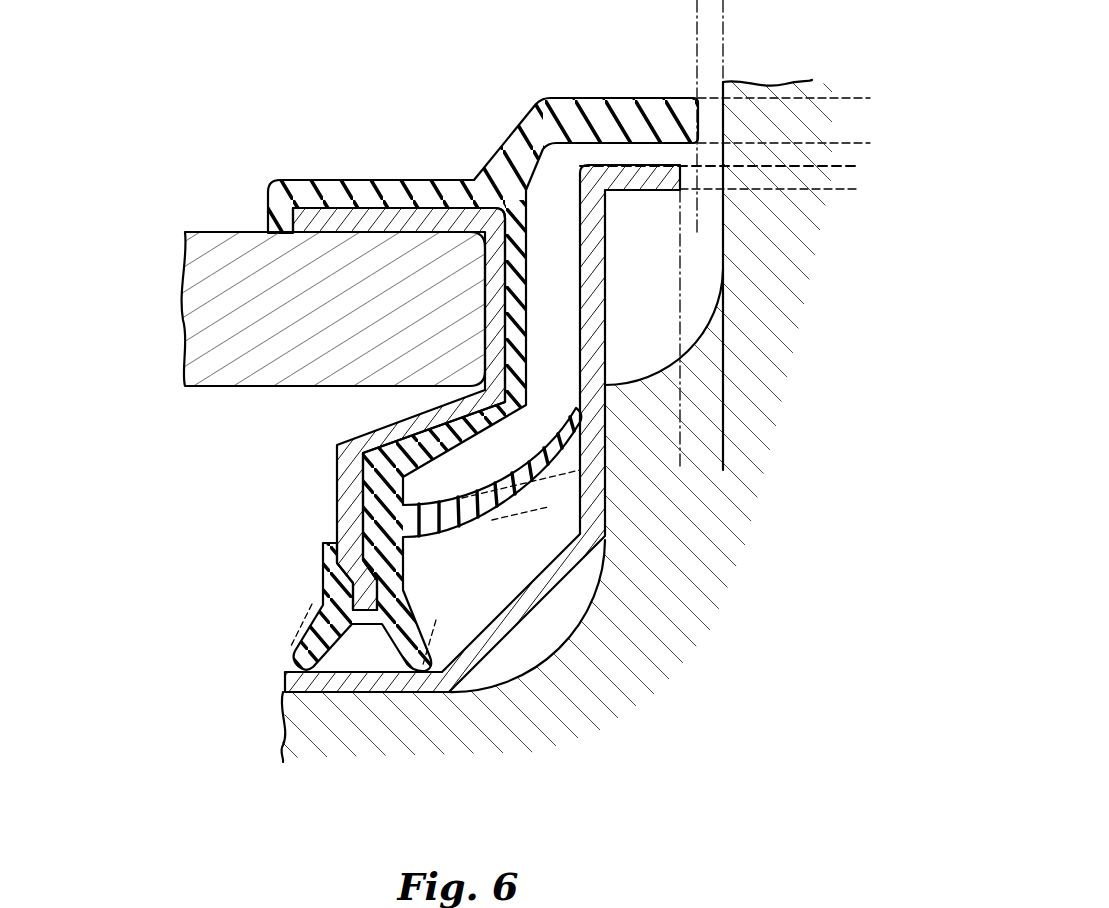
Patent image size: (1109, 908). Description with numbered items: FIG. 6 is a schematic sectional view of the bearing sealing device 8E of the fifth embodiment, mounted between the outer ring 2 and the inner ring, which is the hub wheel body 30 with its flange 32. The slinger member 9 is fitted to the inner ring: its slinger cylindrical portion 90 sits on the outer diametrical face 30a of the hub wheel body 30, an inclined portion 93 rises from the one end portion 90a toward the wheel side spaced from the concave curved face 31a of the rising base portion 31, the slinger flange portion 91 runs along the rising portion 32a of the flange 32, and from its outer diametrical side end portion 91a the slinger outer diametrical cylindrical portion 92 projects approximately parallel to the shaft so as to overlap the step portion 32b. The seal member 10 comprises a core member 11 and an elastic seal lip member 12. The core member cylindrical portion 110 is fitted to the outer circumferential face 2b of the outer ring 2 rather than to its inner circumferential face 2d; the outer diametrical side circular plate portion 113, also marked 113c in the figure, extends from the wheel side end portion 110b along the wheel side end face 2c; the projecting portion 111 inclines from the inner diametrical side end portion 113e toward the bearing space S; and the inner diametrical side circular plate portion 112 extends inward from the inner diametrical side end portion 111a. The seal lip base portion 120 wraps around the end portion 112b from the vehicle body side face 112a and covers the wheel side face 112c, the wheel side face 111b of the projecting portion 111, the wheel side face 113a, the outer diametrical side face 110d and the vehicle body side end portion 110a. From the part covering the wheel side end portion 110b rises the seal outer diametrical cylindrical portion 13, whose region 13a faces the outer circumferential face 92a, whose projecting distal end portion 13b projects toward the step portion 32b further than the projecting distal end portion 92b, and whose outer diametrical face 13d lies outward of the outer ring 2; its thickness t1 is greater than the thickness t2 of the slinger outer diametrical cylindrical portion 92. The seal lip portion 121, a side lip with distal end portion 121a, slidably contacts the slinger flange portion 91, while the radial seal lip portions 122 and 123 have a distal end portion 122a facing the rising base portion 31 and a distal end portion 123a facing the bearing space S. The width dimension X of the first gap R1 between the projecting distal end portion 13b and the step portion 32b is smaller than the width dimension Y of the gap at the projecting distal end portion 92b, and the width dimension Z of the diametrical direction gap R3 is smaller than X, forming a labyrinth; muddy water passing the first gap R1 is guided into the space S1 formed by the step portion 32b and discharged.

The outer ring 2 is at (186, 315).
The outer circumferential face 2b is at (205, 232).
The wheel side end face 2c is at (484, 262).
The inner circumferential face 2d is at (205, 388).
The bearing sealing device 8E is at (150, 445).
The slinger member 9 is at (518, 652).
The seal member 10 is at (170, 505).
The core member 11 is at (330, 513).
The seal lip member 12 is at (313, 577).
The seal outer diametrical cylindrical portion 13 is at (645, 54).
The region facing outer circumferential face 13a is at (580, 108).
The projecting distal end portion 13b is at (727, 130).
The outer diametrical face 13d is at (583, 142).
The hub wheel body 30 is at (287, 735).
The outer diametrical face 30a is at (287, 693).
The rising base portion 31 is at (602, 645).
The concave curved face 31a is at (590, 605).
The flange 32 is at (793, 262).
The rising portion 32a is at (598, 447).
The step portion 32b is at (738, 284).
The slinger cylindrical portion 90 is at (340, 690).
The one end portion 90a is at (446, 682).
The slinger flange portion 91 is at (594, 412).
The outer diametrical side end portion 91a is at (608, 193).
The slinger outer diametrical cylindrical portion 92 is at (654, 180).
The outer circumferential face 92a is at (610, 165).
The projecting distal end portion 92b is at (667, 178).
The inclined portion 93 is at (567, 578).
The core member cylindrical portion 110 is at (380, 245).
The vehicle body side end portion 110a is at (303, 220).
The wheel side end portion 110b is at (490, 215).
The outer diametrical side face 110d is at (345, 208).
The projecting portion 111 is at (418, 422).
The inner diametrical side end portion 111a is at (338, 447).
The wheel side face 111b is at (594, 486).
The inner diametrical side circular plate portion 112 is at (340, 497).
The vehicle body side face 112a is at (326, 552).
The end portion on inner diametrical side 112b is at (397, 603).
The wheel side face 112c is at (375, 546).
The outer diametrical side circular plate portion 113 is at (495, 283).
The wheel side face 113a is at (515, 288).
The fitting portion inner face 113c is at (493, 310).
The inner diametrical side end portion 113e is at (485, 382).
The seal lip base portion 120 is at (395, 480).
The seal lip portion 121 is at (530, 468).
The distal end portion 121a is at (586, 410).
The seal lip portion 122 is at (412, 632).
The distal end portion 122a is at (420, 668).
The seal lip portion 123 is at (310, 640).
The distal end portion 123a is at (292, 655).
The first gap R1 is at (712, 102).
The diametrical direction gap R3 is at (678, 142).
The bearing space S is at (44, 605).
The space S1 is at (668, 322).
The thickness t1 is at (863, 98).
The thickness t2 is at (855, 166).
The width dimension X is at (698, 52).
The width dimension Y is at (680, 373).
The width dimension Z is at (635, 145).